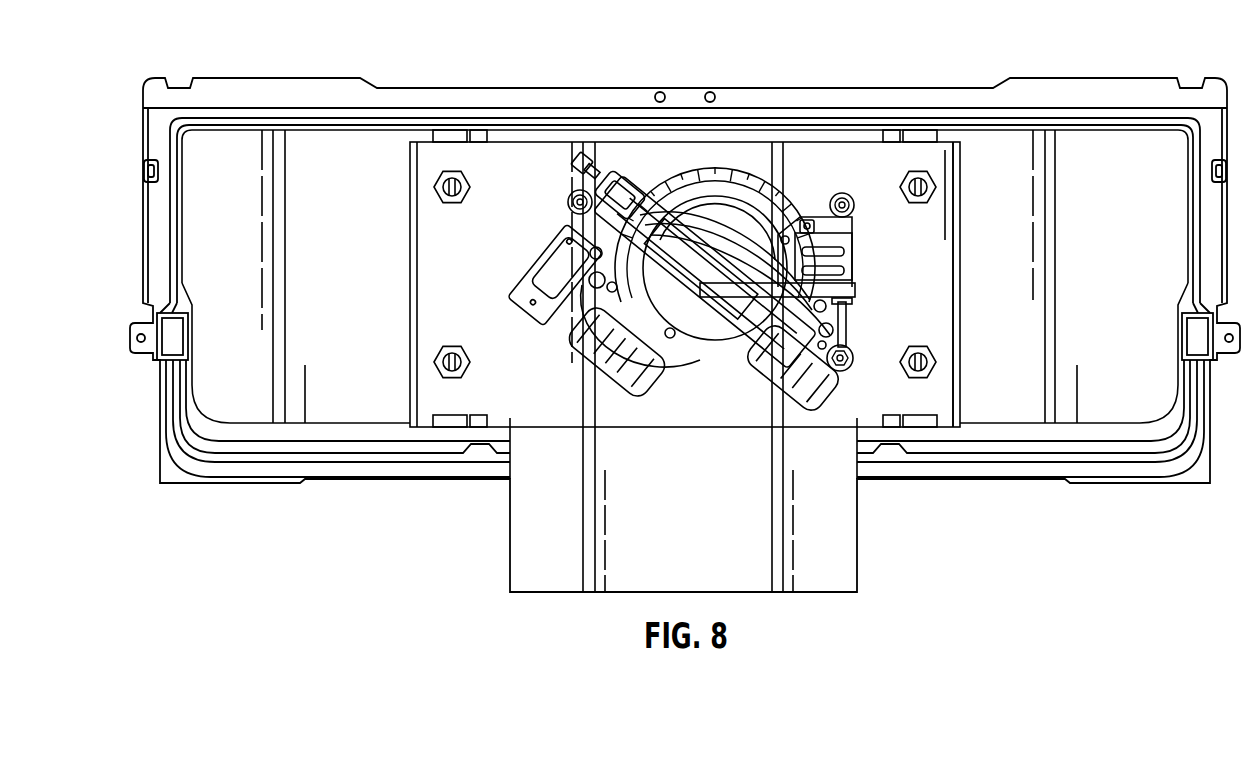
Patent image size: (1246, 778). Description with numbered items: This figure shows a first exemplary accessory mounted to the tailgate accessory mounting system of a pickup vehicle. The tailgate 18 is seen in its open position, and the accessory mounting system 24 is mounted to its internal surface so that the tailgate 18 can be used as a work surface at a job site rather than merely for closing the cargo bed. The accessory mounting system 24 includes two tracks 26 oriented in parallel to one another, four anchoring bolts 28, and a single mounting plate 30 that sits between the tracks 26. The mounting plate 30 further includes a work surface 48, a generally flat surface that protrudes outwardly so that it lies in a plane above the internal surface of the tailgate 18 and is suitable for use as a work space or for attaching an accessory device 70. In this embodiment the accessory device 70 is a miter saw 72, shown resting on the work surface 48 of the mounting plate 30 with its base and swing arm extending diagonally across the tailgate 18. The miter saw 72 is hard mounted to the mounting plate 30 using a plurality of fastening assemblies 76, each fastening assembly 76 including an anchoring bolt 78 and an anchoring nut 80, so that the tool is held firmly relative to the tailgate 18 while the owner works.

The tailgate 18 is at (1125, 88).
The accessory mounting system 24 is at (917, 162).
The track 26 is at (408, 270).
The anchoring bolt 28 is at (436, 186).
The mounting plate 30 is at (928, 252).
The work surface 48 is at (938, 284).
The accessory device 70 is at (733, 160).
The miter saw 72 is at (690, 178).
The fastening assembly 76 is at (565, 190).
The anchoring bolt 78 is at (572, 190).
The anchoring nut 80 is at (572, 208).